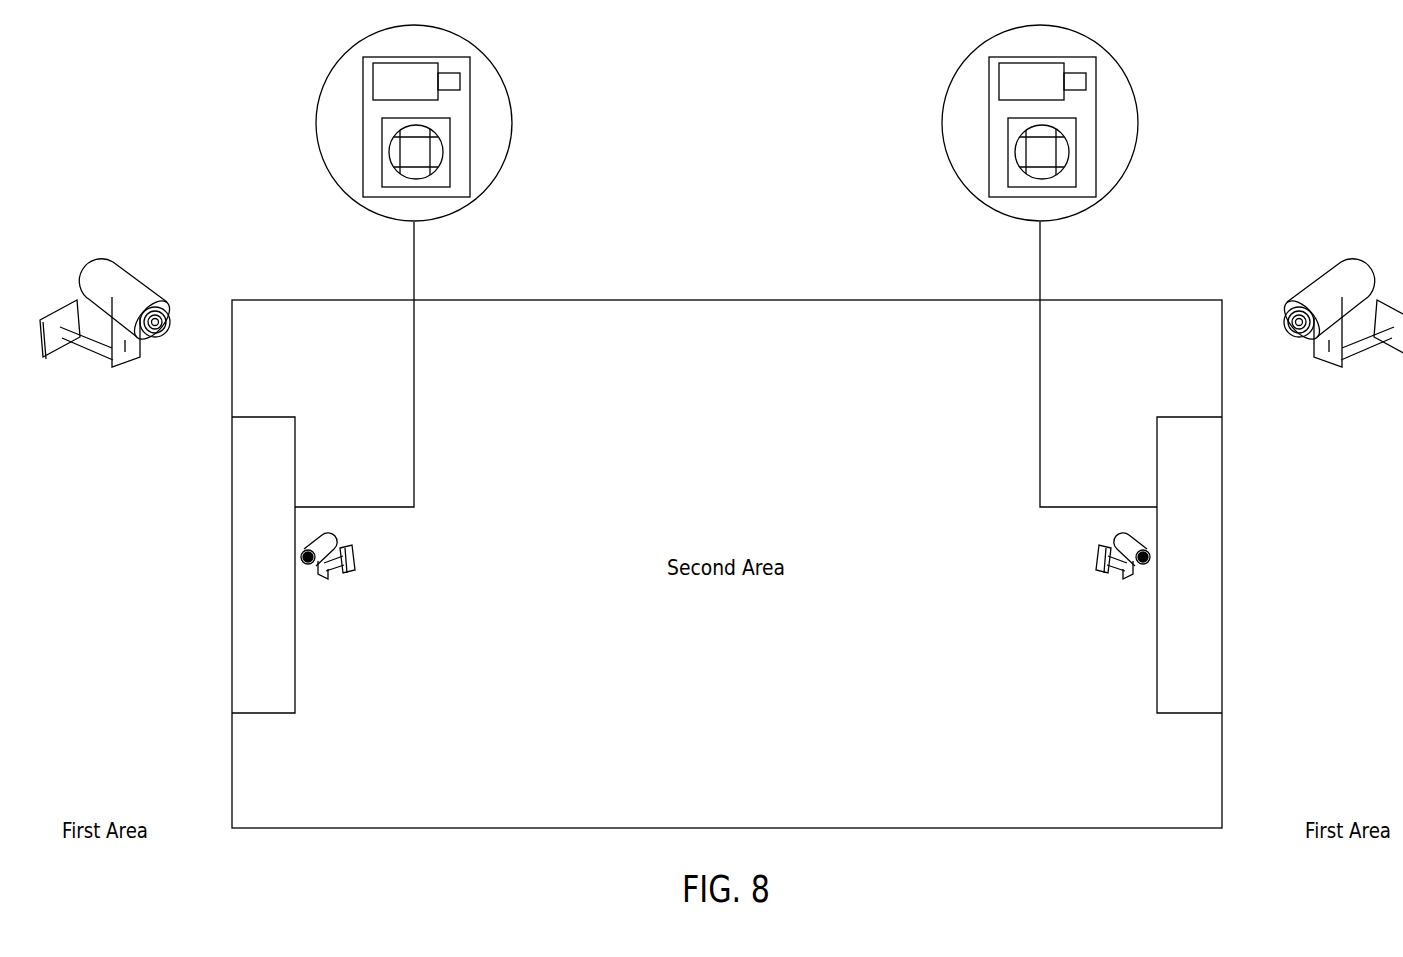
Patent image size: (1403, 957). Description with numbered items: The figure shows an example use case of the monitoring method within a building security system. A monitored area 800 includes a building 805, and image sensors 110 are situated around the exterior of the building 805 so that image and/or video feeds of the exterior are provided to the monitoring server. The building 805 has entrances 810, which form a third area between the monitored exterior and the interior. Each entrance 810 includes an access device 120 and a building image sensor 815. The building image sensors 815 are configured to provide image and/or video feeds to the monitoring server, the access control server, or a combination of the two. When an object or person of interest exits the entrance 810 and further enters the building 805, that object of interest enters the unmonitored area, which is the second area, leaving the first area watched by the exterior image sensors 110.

The monitored area 800 is at (140, 88).
The building 805 is at (725, 300).
The entrance 810 is at (232, 563).
The building image sensor 815 is at (357, 562).
The image sensor 110 is at (118, 261).
The access device 120 is at (317, 125).